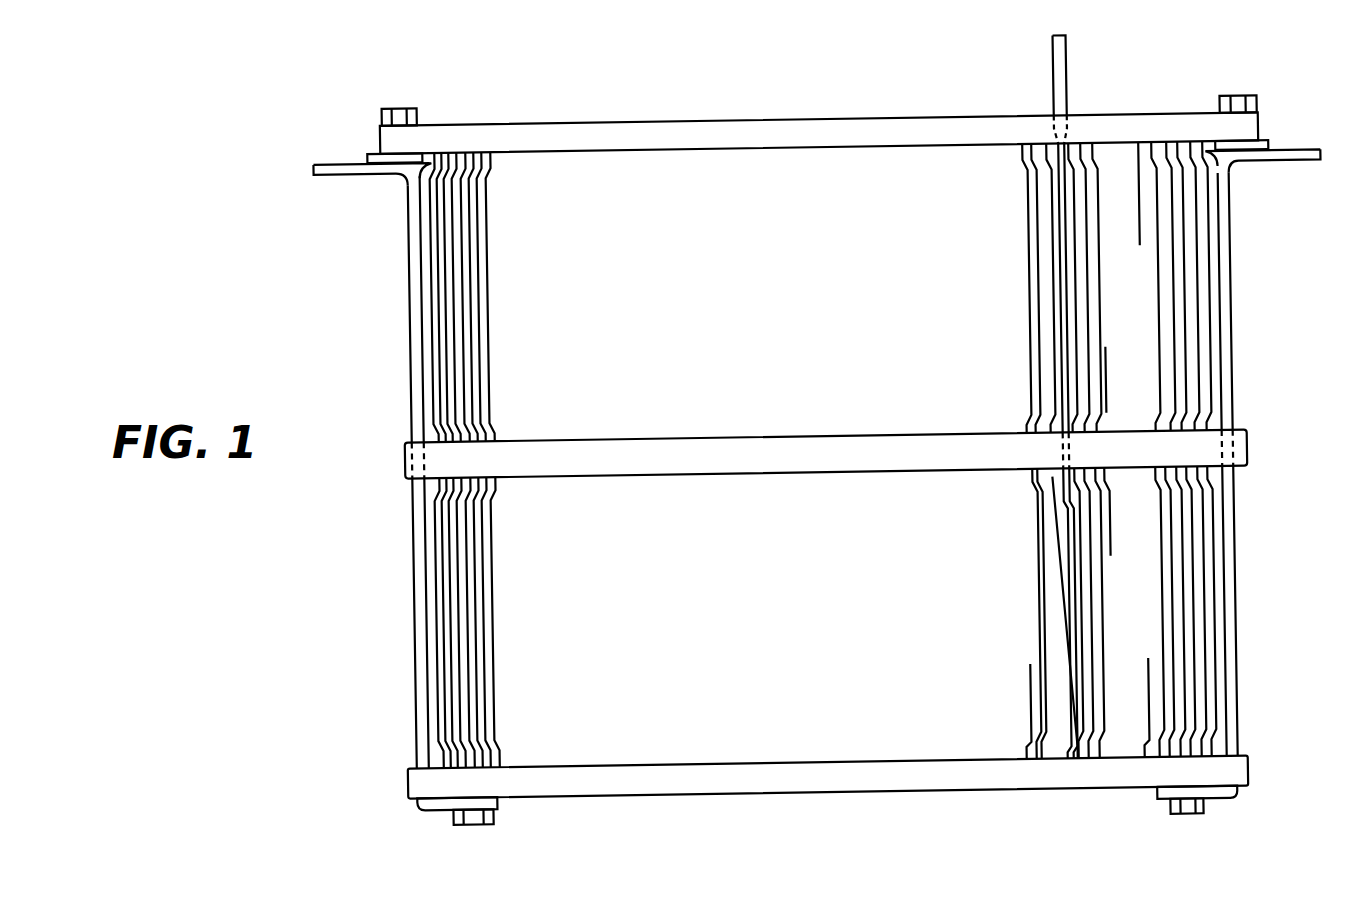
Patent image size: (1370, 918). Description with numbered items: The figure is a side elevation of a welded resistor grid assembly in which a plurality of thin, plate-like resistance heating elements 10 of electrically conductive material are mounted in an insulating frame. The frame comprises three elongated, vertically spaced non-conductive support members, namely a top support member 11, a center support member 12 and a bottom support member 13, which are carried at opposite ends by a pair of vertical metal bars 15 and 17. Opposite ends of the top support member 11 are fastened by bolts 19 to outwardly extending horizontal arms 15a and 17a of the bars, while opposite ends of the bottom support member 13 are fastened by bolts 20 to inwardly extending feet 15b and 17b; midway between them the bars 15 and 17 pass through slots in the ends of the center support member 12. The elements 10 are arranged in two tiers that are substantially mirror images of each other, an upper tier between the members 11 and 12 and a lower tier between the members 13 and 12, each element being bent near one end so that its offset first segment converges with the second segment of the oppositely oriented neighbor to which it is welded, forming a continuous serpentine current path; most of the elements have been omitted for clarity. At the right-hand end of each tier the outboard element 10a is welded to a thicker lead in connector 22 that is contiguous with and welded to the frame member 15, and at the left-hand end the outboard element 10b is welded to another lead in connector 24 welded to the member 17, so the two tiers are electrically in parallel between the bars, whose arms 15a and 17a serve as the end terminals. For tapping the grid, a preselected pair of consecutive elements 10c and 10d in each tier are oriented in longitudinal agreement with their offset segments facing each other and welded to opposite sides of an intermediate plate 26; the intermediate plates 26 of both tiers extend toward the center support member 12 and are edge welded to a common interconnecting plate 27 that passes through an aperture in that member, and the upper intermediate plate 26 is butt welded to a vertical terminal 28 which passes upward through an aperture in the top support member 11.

The resistance heating element 10 is at (492, 335).
The outboard element 10a is at (1212, 208).
The outboard element 10b is at (432, 236).
The electroconductive element 10c is at (1075, 210).
The electroconductive element 10d is at (1036, 186).
The top support member 11 is at (708, 118).
The center support member 12 is at (700, 440).
The bottom support member 13 is at (760, 800).
The vertical member 15 is at (1236, 398).
The horizontal arm 15a is at (1290, 160).
The foot 15b is at (1238, 802).
The vertical member 17 is at (406, 380).
The horizontal arm 17a is at (328, 160).
The foot 17b is at (425, 812).
The bolt 19 is at (418, 108).
The bolt 20 is at (495, 816).
The lead in connector 22 is at (1222, 314).
The lead in connector 24 is at (432, 306).
The intermediate plate 26 is at (1058, 355).
The interconnecting plate 27 is at (1053, 482).
The terminal 28 is at (1052, 78).